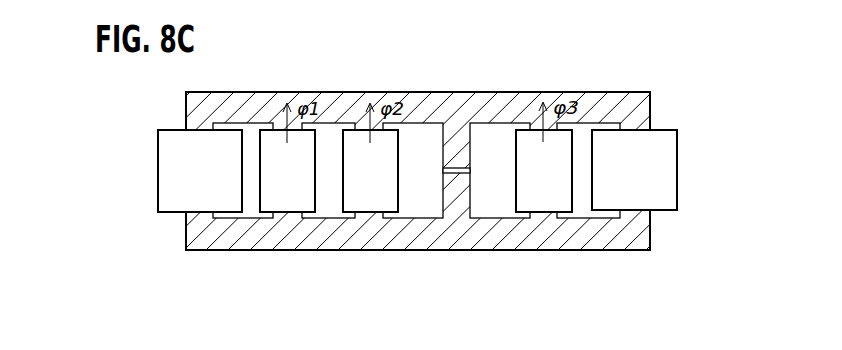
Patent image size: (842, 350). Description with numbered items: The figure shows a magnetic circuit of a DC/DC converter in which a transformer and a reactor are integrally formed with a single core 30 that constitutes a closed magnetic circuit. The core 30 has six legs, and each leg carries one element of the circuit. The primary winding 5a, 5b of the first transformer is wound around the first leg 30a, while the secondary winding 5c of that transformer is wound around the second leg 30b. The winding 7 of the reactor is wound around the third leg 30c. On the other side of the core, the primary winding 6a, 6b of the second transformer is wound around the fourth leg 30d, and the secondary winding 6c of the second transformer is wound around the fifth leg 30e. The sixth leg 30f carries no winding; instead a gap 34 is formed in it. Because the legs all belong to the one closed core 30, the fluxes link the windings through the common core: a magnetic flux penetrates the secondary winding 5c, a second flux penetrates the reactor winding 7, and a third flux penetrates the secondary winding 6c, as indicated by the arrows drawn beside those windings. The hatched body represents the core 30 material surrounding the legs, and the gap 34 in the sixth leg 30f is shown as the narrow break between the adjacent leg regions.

The primary winding 5a is at (152, 171).
The primary winding 5b is at (158, 172).
The secondary winding 5c is at (252, 143).
The primary winding 6a is at (685, 170).
The primary winding 6b is at (677, 165).
The secondary winding 6c is at (573, 140).
The winding 7 is at (399, 170).
The core 30 is at (462, 92).
The first leg 30a is at (186, 222).
The second leg 30b is at (307, 218).
The third leg 30c is at (396, 218).
The fourth leg 30d is at (650, 218).
The fifth leg 30e is at (576, 218).
The sixth leg 30f is at (470, 187).
The gap 34 is at (473, 168).